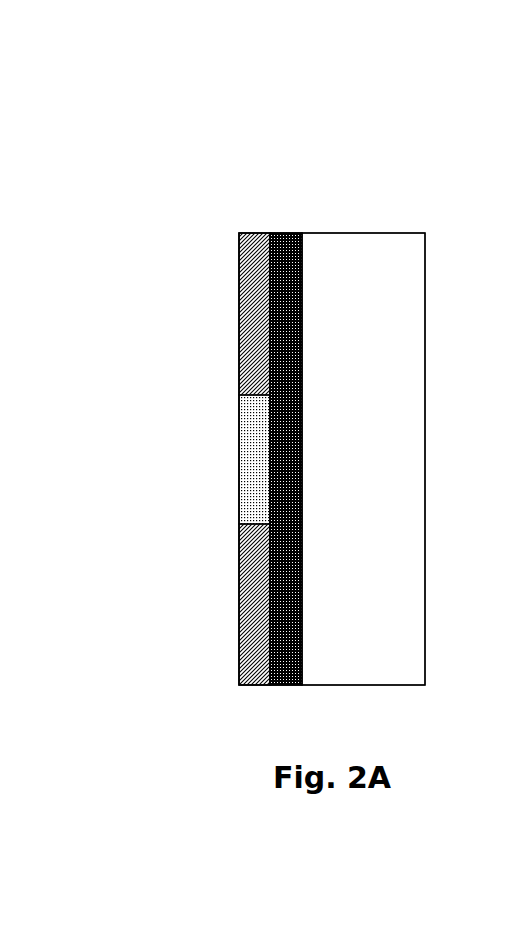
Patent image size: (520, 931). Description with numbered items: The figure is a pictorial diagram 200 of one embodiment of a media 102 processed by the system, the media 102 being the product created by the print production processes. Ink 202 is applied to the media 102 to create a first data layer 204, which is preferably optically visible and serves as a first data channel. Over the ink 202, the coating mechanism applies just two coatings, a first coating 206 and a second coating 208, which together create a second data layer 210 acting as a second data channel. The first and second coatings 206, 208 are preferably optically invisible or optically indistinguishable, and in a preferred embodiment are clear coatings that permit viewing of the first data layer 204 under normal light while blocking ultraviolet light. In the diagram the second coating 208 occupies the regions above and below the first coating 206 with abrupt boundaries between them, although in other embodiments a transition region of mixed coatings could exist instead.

The pictorial diagram 200 is at (130, 130).
The media 102 is at (427, 455).
The ink 202 is at (300, 450).
The first data layer 204 is at (290, 233).
The first coating 206 is at (239, 460).
The second coating 208 is at (239, 607).
The second data layer 210 is at (255, 233).